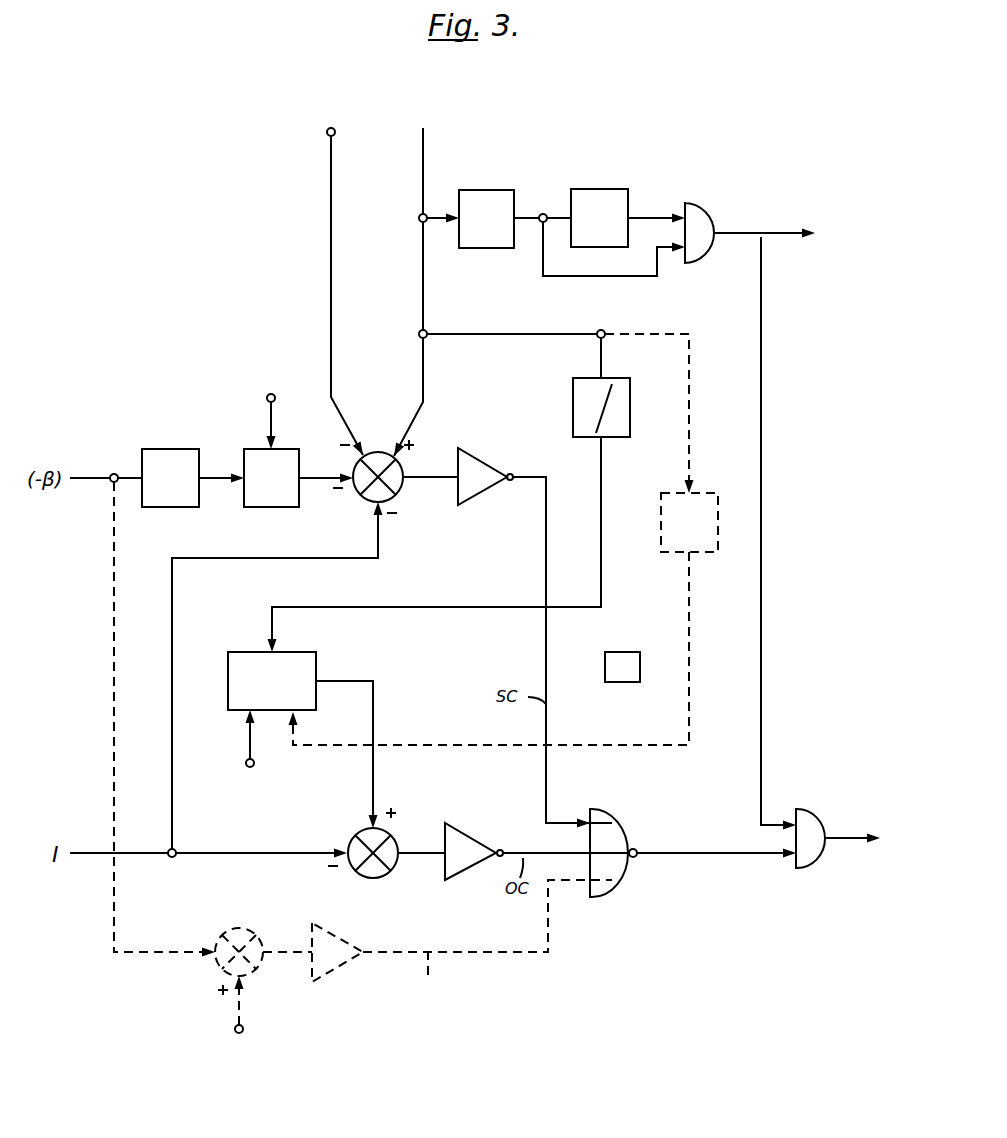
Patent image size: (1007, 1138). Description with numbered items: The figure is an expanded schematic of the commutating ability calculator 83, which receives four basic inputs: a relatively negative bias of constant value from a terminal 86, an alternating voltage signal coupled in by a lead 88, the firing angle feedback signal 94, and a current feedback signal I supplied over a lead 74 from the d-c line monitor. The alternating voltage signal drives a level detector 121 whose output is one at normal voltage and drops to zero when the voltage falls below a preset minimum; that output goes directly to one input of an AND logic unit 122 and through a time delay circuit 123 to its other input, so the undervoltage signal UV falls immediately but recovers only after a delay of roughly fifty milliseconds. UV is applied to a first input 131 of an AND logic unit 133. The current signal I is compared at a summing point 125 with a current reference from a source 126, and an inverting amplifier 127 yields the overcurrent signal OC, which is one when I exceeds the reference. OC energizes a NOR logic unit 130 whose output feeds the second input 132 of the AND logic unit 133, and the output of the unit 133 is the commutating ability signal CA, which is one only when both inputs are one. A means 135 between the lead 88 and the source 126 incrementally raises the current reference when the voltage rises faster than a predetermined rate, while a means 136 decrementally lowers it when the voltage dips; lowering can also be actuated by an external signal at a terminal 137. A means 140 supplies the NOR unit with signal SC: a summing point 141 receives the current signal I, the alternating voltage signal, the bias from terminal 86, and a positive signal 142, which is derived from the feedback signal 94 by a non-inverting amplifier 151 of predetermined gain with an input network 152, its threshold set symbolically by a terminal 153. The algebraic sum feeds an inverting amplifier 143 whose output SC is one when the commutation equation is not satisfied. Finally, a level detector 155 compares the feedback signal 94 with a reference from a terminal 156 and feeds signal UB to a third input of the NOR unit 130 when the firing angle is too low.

The lead 74 is at (90, 858).
The commutating ability calculator 83 is at (622, 667).
The terminal 86 is at (327, 136).
The lead 88 is at (421, 160).
The firing angle feedback signal 94 is at (86, 475).
The level detector 121 is at (482, 189).
The AND logic unit 122 is at (707, 213).
The time delay circuit 123 is at (597, 188).
The summing point 125 is at (389, 873).
The source of current reference signal 126 is at (317, 663).
The inverting amplifier 127 is at (466, 836).
The NOR logic unit 130 is at (632, 870).
The first input 131 is at (761, 786).
The second input 132 is at (745, 858).
The AND logic unit 133 is at (816, 812).
The means for incrementally adjusting current reference signal 135 is at (573, 392).
The means for decrementally adjusting current reference signal 136 is at (718, 500).
The terminal 137 is at (246, 762).
The means for feeding signal SC 140 is at (443, 532).
The summing point 141 is at (363, 495).
The positive signal 142 is at (312, 477).
The inverting amplifier 143 is at (488, 460).
The non-inverting amplifier 151 is at (267, 508).
The input network 152 is at (166, 449).
The terminal 153 is at (266, 399).
The level detector 155 is at (303, 1013).
The terminal 156 is at (235, 1033).